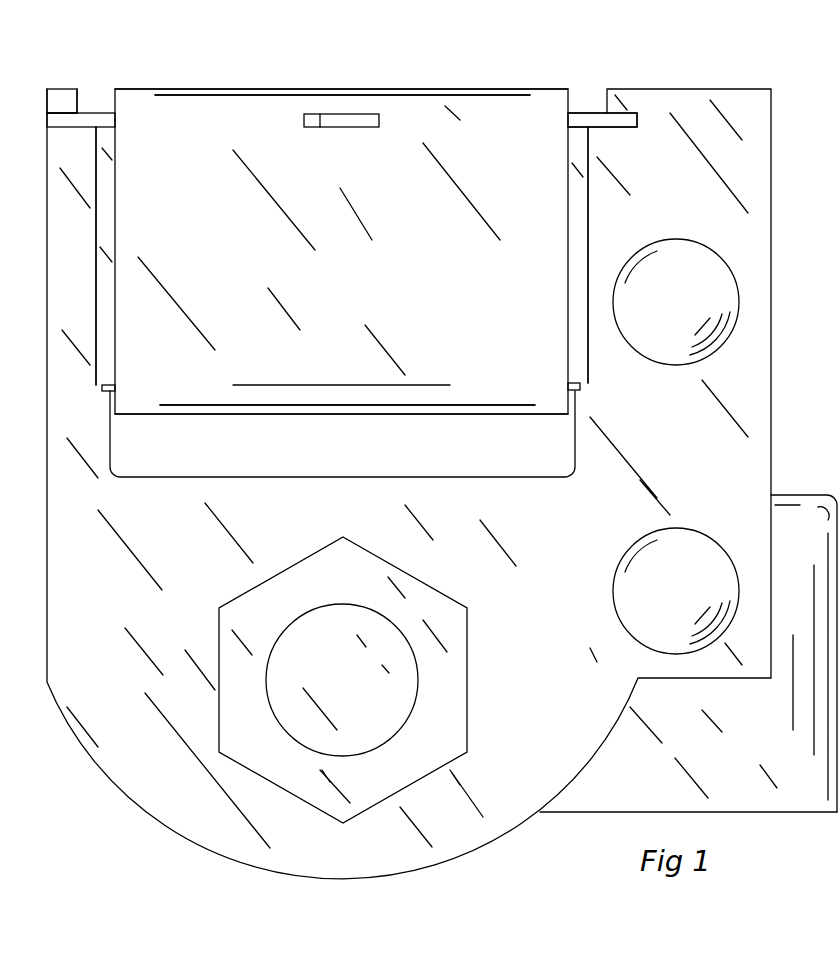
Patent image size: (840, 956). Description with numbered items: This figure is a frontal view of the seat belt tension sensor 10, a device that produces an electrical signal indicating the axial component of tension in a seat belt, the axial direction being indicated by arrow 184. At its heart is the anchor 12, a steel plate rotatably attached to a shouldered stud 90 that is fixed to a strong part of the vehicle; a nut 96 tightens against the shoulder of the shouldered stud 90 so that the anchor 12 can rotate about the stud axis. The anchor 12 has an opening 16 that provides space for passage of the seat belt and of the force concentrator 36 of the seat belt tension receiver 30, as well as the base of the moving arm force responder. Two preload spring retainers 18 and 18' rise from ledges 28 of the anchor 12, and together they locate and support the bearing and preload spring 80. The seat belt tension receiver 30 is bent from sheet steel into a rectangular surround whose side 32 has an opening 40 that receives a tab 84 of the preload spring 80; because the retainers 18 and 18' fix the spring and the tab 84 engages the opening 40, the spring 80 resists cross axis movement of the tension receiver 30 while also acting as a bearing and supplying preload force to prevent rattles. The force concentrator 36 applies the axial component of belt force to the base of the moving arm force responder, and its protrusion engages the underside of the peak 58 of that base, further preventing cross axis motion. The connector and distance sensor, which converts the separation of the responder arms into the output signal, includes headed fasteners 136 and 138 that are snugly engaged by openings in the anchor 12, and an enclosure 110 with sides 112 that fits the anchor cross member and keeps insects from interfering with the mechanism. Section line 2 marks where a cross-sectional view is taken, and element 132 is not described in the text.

The seat belt tension sensor 10 is at (577, 787).
The anchor 12 is at (532, 764).
The opening 16 is at (455, 459).
The preload spring retainer 18 is at (111, 136).
The preload spring retainer 18' is at (602, 85).
The ledge 28 is at (90, 128).
The seat belt tension receiver 30 is at (517, 314).
The side 32 is at (242, 314).
The force concentrator 36 is at (215, 415).
The opening 40 is at (319, 116).
The peak 58 is at (197, 90).
The bearing and preload spring 80 is at (562, 120).
The tab 84 is at (340, 118).
The shouldered stud 90 is at (350, 684).
The nut 96 is at (415, 577).
The enclosure 110 is at (107, 235).
The side 112 is at (108, 387).
The connector housing 132 is at (783, 495).
The headed fastener 136 is at (630, 545).
The headed fastener 138 is at (678, 366).
The arrow 184 is at (839, 135).
The section line 2- 2 is at (137, 63).